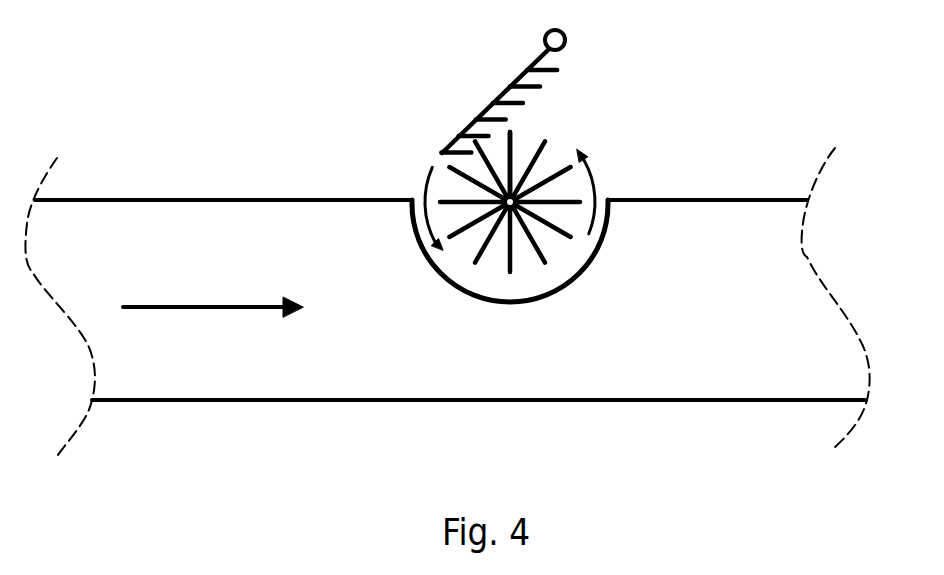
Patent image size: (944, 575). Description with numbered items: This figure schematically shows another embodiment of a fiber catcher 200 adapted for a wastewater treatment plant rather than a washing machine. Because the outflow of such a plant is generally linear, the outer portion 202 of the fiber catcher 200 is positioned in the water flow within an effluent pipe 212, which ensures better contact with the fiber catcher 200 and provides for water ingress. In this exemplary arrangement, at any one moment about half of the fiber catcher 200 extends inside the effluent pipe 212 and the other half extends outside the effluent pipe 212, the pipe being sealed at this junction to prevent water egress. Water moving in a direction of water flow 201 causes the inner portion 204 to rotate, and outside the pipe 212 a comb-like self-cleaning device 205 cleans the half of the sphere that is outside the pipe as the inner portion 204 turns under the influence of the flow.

The fiber catcher 200 is at (447, 302).
The direction of water flow 201 is at (197, 305).
The outer portion 202 is at (585, 268).
The inner portion 204 is at (513, 147).
The cleaning device 205 is at (522, 73).
The effluent pipe 212 is at (230, 402).